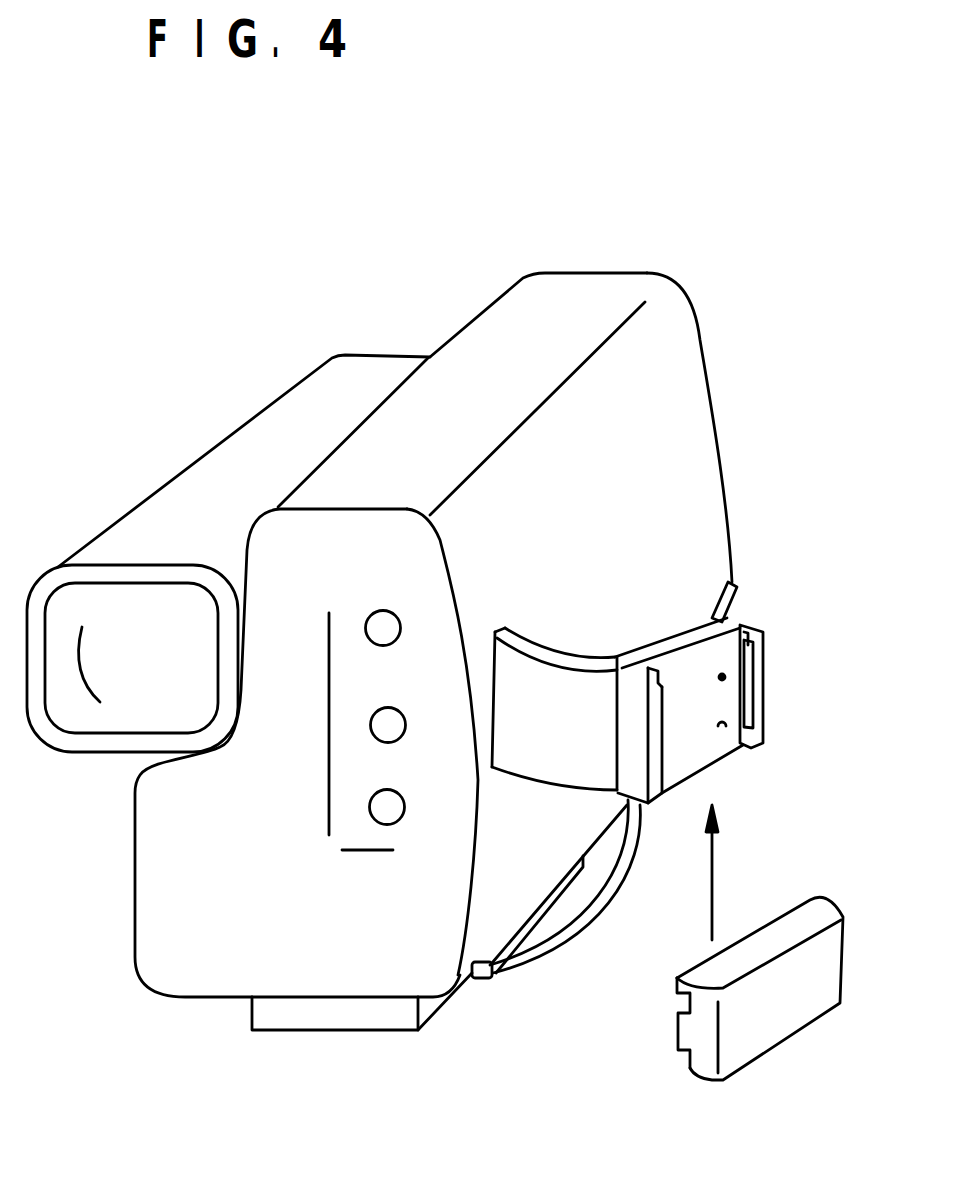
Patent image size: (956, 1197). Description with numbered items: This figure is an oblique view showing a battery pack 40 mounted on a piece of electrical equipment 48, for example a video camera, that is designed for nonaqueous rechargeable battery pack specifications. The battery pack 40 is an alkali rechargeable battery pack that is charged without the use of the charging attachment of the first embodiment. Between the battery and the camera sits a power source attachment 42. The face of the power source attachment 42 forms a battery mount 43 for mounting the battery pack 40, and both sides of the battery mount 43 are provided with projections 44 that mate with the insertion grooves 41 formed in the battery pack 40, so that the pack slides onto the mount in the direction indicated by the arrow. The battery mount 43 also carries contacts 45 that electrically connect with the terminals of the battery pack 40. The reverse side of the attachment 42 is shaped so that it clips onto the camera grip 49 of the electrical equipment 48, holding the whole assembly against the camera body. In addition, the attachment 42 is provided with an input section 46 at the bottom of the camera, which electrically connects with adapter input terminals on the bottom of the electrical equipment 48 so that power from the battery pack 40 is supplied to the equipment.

The battery pack 40 is at (760, 1032).
The insertion grooves 41 is at (680, 1013).
The power source attachment 42 is at (748, 610).
The battery mount 43 is at (688, 752).
The projections 44 is at (764, 672).
The contacts 45 is at (720, 727).
The input section 46 is at (350, 1020).
The electrical equipment 48 is at (682, 357).
The camera grip 49 is at (553, 652).